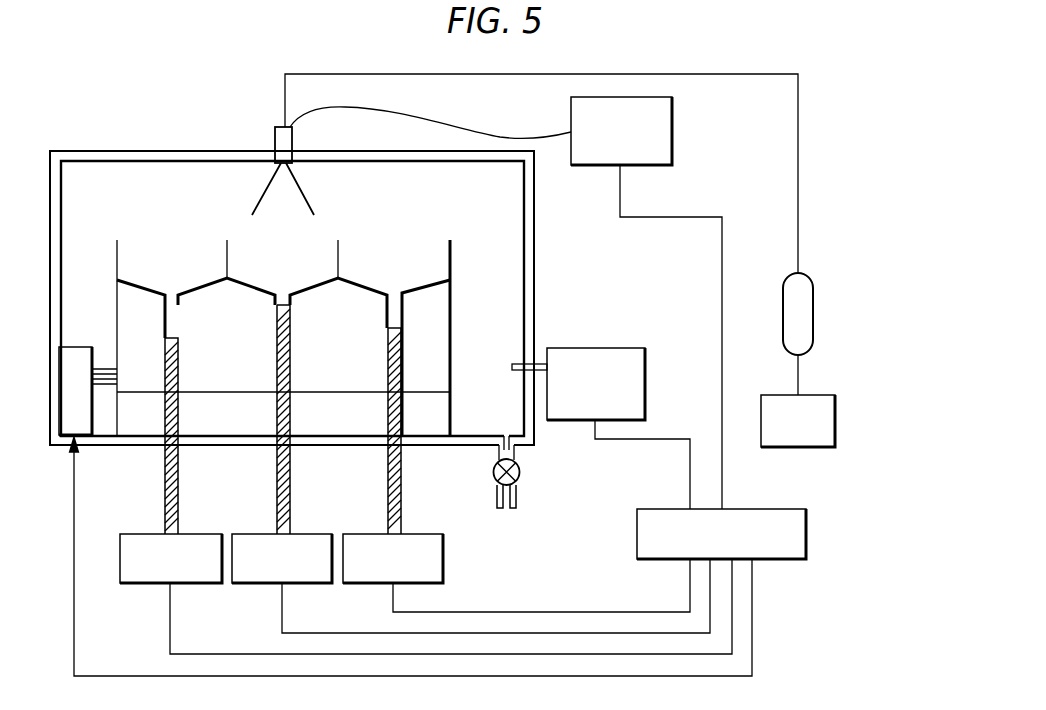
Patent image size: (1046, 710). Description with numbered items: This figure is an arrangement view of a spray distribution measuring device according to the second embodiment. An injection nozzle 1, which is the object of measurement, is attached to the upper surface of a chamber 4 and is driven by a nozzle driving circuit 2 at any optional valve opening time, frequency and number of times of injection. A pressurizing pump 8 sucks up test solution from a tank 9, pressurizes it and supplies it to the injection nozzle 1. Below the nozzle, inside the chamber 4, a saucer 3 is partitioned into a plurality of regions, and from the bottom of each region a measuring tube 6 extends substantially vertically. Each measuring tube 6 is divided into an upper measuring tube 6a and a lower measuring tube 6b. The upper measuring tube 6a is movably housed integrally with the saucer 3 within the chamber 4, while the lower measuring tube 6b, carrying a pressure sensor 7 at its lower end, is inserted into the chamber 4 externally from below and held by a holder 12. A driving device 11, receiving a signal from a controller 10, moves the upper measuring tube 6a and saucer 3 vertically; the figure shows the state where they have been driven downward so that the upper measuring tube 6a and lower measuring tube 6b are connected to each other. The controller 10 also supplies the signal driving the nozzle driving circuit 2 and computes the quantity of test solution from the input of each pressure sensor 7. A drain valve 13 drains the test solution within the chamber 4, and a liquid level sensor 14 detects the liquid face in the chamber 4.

The injection nozzle 1 is at (274, 133).
The nozzle driving circuit 2 is at (674, 130).
The saucer 3 is at (428, 292).
The chamber 4 is at (536, 268).
The measuring tube 6 is at (331, 419).
The upper measuring tube 6a is at (402, 340).
The lower measuring tube 6b is at (402, 478).
The pressure sensor 7 is at (445, 557).
The pressurizing pump 8 is at (815, 313).
The tank 9 is at (837, 420).
The controller 10 is at (808, 536).
The driving device 11 is at (82, 345).
The holder 12 is at (430, 408).
The drain valve 13 is at (521, 470).
The liquid level sensor 14 is at (647, 381).